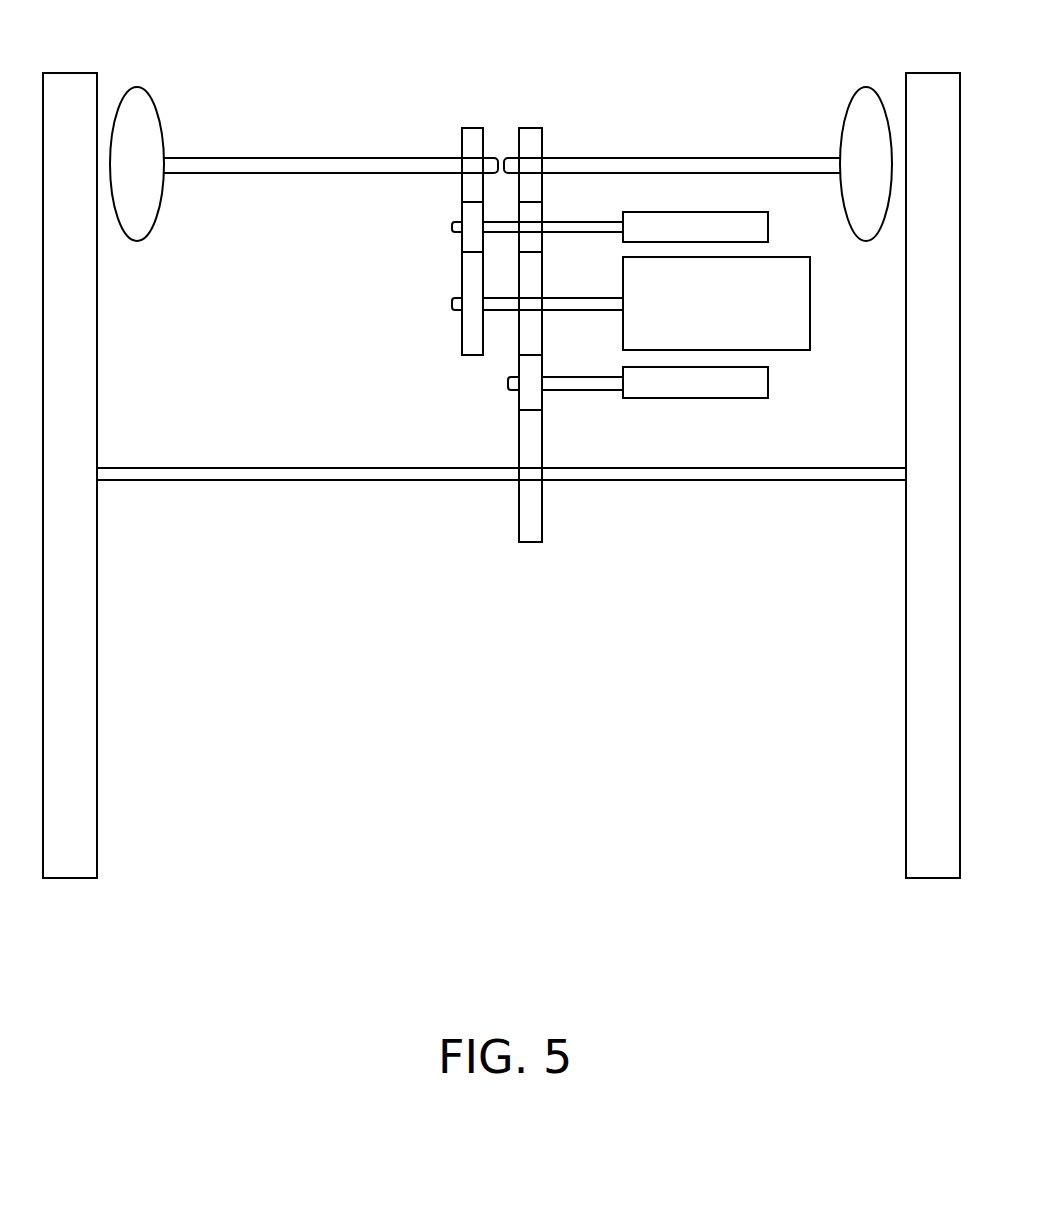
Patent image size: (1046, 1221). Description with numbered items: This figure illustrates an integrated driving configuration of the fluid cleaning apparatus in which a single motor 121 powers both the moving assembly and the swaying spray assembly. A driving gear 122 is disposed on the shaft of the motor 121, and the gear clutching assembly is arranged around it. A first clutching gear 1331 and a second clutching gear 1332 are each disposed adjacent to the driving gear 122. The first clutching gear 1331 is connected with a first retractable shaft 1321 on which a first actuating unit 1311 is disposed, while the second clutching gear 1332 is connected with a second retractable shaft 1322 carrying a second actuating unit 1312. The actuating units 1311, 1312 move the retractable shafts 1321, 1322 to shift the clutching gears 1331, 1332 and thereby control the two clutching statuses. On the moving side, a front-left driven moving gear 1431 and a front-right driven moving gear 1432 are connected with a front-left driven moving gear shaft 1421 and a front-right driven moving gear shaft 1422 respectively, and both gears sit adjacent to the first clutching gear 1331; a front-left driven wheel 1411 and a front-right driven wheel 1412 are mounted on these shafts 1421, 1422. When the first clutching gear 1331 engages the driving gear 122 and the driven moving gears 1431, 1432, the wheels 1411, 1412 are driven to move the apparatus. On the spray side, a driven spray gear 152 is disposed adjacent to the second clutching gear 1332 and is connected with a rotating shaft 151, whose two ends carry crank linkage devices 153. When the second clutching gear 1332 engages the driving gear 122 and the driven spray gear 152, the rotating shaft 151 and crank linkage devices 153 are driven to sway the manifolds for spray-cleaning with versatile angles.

The motor 121 is at (778, 350).
The driving gear 122 is at (519, 340).
The rotating shaft 151 is at (570, 482).
The driven spray gear 152 is at (519, 535).
The crank linkage devices 153 is at (97, 645).
The first actuating unit 1311 is at (770, 226).
The second actuating unit 1312 is at (690, 398).
The first retractable shaft 1321 is at (455, 226).
The second retractable shaft 1322 is at (568, 390).
The first clutching gear 1331 is at (519, 240).
The second clutching gear 1332 is at (519, 395).
The front-left driven wheel 1411 is at (152, 105).
The front-right driven wheel 1412 is at (846, 105).
The front-left driven moving gear shaft 1421 is at (282, 158).
The front-right driven moving gear shaft 1422 is at (720, 158).
The front-left driven moving gear 1431 is at (472, 128).
The front-right driven moving gear 1432 is at (530, 128).